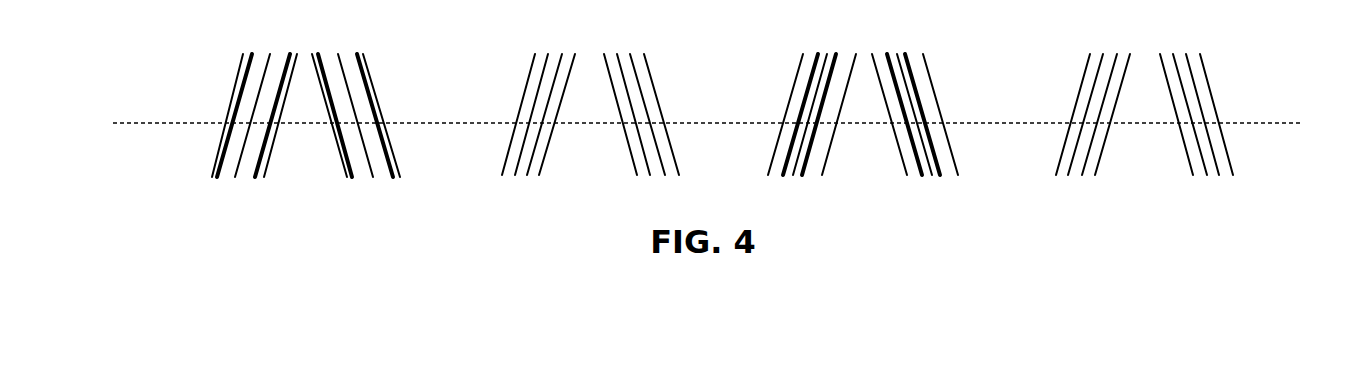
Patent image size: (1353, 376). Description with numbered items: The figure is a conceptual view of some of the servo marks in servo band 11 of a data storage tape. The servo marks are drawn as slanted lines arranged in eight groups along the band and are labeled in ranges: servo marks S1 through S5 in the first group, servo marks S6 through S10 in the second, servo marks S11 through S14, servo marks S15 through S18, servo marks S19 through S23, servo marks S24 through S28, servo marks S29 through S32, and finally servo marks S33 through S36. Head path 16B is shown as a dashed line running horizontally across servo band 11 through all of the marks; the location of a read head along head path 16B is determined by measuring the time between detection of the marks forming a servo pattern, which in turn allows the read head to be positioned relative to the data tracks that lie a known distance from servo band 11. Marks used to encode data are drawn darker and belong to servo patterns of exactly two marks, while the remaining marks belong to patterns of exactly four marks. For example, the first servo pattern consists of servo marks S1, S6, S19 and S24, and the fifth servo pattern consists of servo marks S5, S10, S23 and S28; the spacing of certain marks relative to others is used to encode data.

The servo band 11 is at (118, 93).
The head path 16B is at (1300, 123).
The servo mark S1 is at (224, 129).
The servo mark S5 is at (275, 129).
The servo mark S6 is at (338, 129).
The servo mark S10 is at (395, 129).
The servo mark S11 is at (512, 129).
The servo mark S14 is at (562, 129).
The servo mark S15 is at (629, 129).
The servo mark S18 is at (681, 129).
The servo mark S19 is at (780, 129).
The servo mark S23 is at (838, 129).
The servo mark S24 is at (898, 129).
The servo mark S28 is at (956, 129).
The servo mark S29 is at (1062, 129).
The servo mark S32 is at (1112, 129).
The servo mark S33 is at (1185, 129).
The servo mark S36 is at (1237, 129).